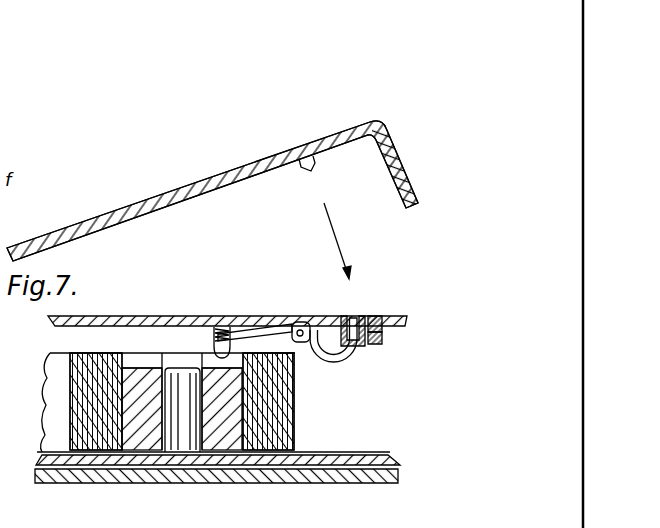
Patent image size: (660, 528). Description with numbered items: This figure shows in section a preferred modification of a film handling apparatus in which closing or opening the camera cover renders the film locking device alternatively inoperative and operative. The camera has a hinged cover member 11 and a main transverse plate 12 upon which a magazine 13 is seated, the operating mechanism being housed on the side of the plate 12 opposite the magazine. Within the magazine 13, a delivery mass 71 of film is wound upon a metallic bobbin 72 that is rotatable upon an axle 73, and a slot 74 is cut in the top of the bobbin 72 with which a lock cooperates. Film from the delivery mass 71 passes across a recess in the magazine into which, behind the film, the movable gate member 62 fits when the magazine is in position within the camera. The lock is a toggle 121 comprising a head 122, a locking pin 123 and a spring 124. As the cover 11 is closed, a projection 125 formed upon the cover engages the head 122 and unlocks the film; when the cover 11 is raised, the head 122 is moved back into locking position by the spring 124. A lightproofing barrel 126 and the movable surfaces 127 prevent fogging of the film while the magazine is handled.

The cover member 11 is at (148, 197).
The main transverse plate 12 is at (119, 481).
The magazine 13 is at (149, 315).
The movable gate member 62 is at (11, 153).
The delivery mass 71 is at (280, 423).
The metallic bobbin 72 is at (132, 398).
The axle 73 is at (182, 382).
The slot 74 is at (137, 363).
The toggle 121 is at (342, 365).
The head 122 is at (357, 313).
The locking pin 123 is at (214, 326).
The spring 124 is at (234, 330).
The projection 125 is at (308, 170).
The lightproofing barrel 126 is at (374, 331).
The movable surfaces 127 is at (377, 343).